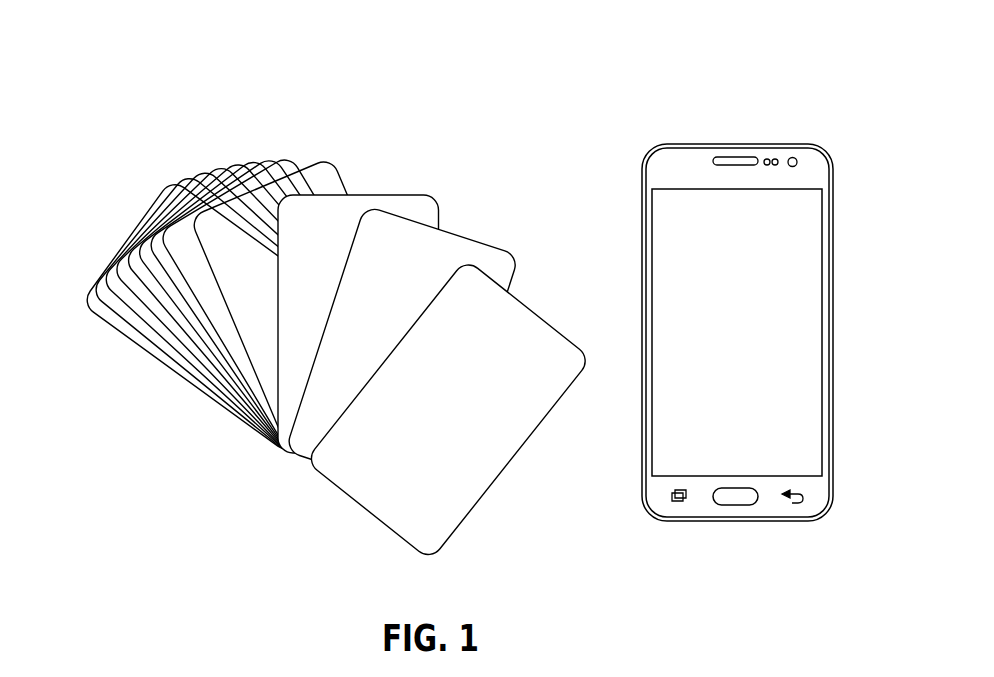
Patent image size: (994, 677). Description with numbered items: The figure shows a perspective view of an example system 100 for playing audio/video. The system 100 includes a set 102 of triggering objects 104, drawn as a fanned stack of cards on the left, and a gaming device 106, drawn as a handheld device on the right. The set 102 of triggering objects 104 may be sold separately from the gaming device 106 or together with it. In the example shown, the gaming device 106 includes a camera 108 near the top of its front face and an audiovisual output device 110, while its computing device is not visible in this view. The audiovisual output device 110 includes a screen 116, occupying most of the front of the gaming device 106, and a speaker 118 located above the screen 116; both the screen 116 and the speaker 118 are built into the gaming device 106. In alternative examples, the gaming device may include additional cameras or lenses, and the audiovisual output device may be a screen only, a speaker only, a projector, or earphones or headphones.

The system for playing audio/video 100 is at (80, 185).
The set of triggering objects 102 is at (390, 180).
The triggering objects 104 is at (302, 435).
The gaming device 106 is at (794, 260).
The camera 108 is at (796, 157).
The audiovisual output device 110 is at (735, 238).
The screen 116 is at (692, 213).
The speaker 118 is at (731, 155).